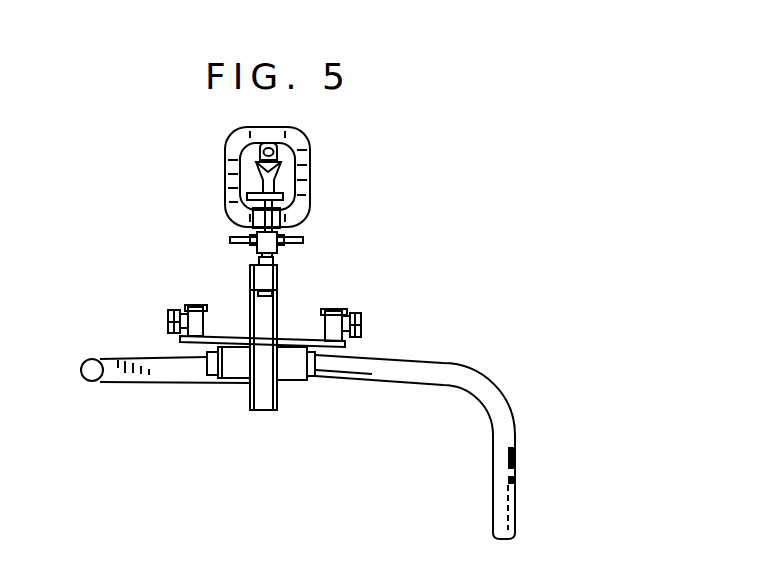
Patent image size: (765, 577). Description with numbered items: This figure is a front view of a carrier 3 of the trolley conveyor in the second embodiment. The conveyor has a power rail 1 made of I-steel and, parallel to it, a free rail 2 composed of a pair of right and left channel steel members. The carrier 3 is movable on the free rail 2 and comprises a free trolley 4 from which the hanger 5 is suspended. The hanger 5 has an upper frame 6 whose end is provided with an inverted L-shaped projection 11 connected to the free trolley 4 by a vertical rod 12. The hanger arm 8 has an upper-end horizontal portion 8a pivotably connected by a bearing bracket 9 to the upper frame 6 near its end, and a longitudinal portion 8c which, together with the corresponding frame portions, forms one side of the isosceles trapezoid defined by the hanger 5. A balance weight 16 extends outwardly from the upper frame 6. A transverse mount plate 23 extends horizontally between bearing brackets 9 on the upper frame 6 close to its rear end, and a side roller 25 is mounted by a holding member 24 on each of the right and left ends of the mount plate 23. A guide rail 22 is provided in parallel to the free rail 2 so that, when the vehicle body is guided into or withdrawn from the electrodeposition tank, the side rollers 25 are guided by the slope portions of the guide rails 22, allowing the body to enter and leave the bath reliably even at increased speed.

The power rail 1 is at (268, 145).
The free rail 2 is at (285, 223).
The carrier 3 is at (523, 318).
The free trolley 4 is at (302, 245).
The hanger 5 is at (505, 445).
The upper frame 6 is at (262, 403).
The arm 8 is at (515, 475).
The upper-end horizontal portion 8a is at (370, 372).
The longitudinal portion 8c is at (515, 513).
The bearing bracket 9 is at (293, 373).
The inverted L-shaped projection 11 is at (263, 280).
The vertical rod 12 is at (252, 258).
The balance weight 16 is at (90, 373).
The guide rail 22 is at (170, 312).
The transverse mount plate 23 is at (208, 347).
The holding member 24 is at (195, 305).
The side roller 25 is at (170, 325).